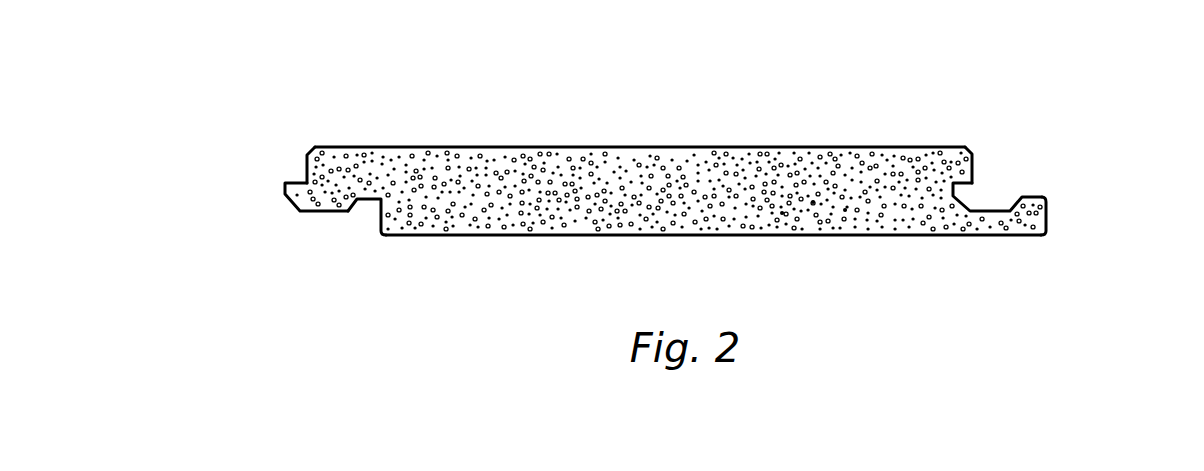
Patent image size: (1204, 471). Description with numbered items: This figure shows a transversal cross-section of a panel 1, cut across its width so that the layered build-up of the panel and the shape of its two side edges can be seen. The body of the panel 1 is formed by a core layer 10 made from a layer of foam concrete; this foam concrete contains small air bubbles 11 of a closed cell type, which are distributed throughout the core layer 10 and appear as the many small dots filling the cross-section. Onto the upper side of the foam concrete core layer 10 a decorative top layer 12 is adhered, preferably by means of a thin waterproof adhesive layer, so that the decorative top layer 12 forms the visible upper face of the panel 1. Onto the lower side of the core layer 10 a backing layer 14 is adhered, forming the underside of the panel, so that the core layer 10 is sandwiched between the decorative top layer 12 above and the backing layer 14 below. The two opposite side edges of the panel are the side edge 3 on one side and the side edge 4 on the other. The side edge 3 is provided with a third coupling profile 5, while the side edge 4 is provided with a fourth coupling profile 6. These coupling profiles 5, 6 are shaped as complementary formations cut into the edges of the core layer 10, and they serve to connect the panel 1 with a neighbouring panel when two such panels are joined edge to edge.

The panel 1 is at (305, 113).
The side edge 3 is at (258, 183).
The side edge 4 is at (1072, 212).
The third coupling profile 5 is at (328, 190).
The fourth coupling profile 6 is at (982, 227).
The core layer 10 is at (644, 180).
The air bubbles 11 is at (813, 202).
The decorative top layer 12 is at (789, 147).
The balancing layer 14 is at (523, 237).